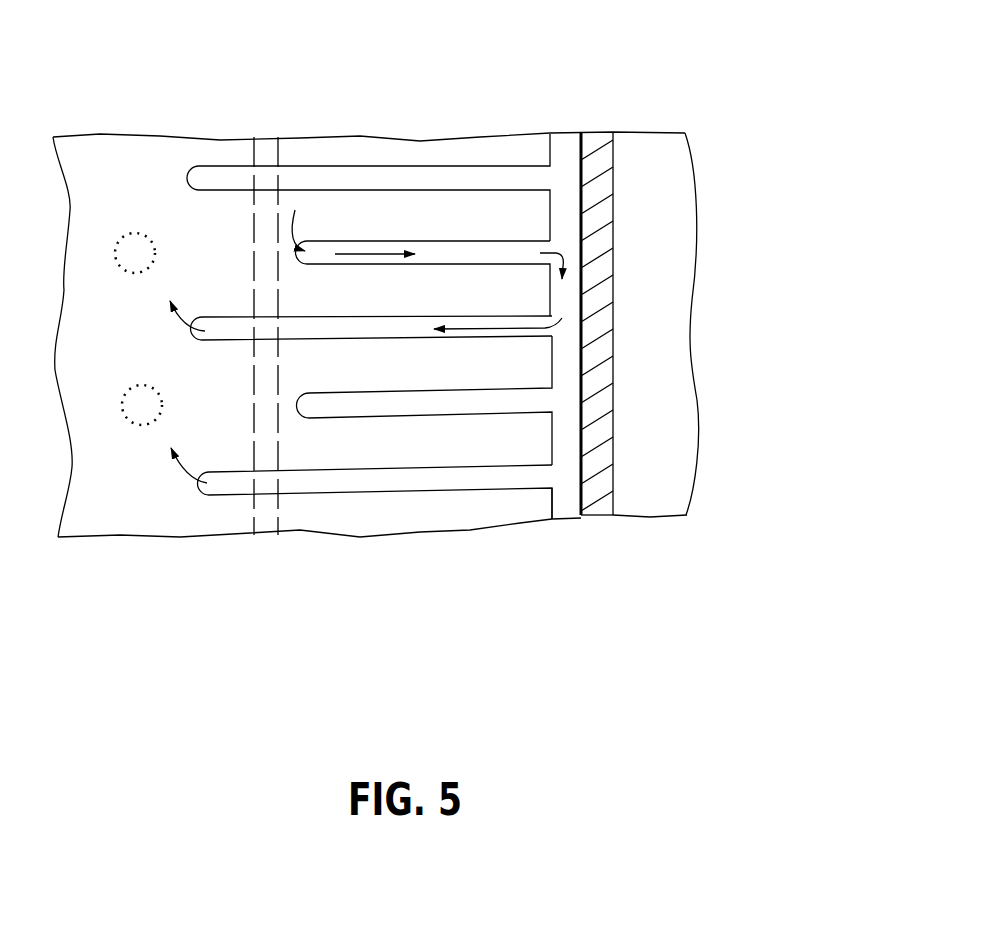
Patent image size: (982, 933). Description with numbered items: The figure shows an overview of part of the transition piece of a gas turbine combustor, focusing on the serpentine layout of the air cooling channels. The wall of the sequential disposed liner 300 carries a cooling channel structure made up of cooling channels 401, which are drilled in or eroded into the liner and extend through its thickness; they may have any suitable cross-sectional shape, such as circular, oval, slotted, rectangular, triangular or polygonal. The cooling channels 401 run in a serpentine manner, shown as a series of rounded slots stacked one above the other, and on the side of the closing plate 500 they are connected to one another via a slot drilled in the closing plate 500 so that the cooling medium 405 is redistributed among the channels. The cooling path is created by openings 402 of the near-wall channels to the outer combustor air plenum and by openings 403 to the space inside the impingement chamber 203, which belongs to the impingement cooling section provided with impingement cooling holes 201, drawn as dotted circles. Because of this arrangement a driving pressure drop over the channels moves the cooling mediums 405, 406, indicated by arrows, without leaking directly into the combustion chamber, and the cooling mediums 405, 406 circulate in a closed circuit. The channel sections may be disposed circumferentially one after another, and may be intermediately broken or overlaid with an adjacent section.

The impingement cooling holes 201 is at (140, 243).
The impingement chamber 203 is at (127, 341).
The sequential disposed liner 300 is at (472, 150).
The cooling channels 401 is at (477, 253).
The openings 402 is at (309, 252).
The openings 403 is at (197, 343).
The cooling medium 405 is at (565, 272).
The cooling medium 406 is at (562, 324).
The closing plate 500 is at (598, 160).